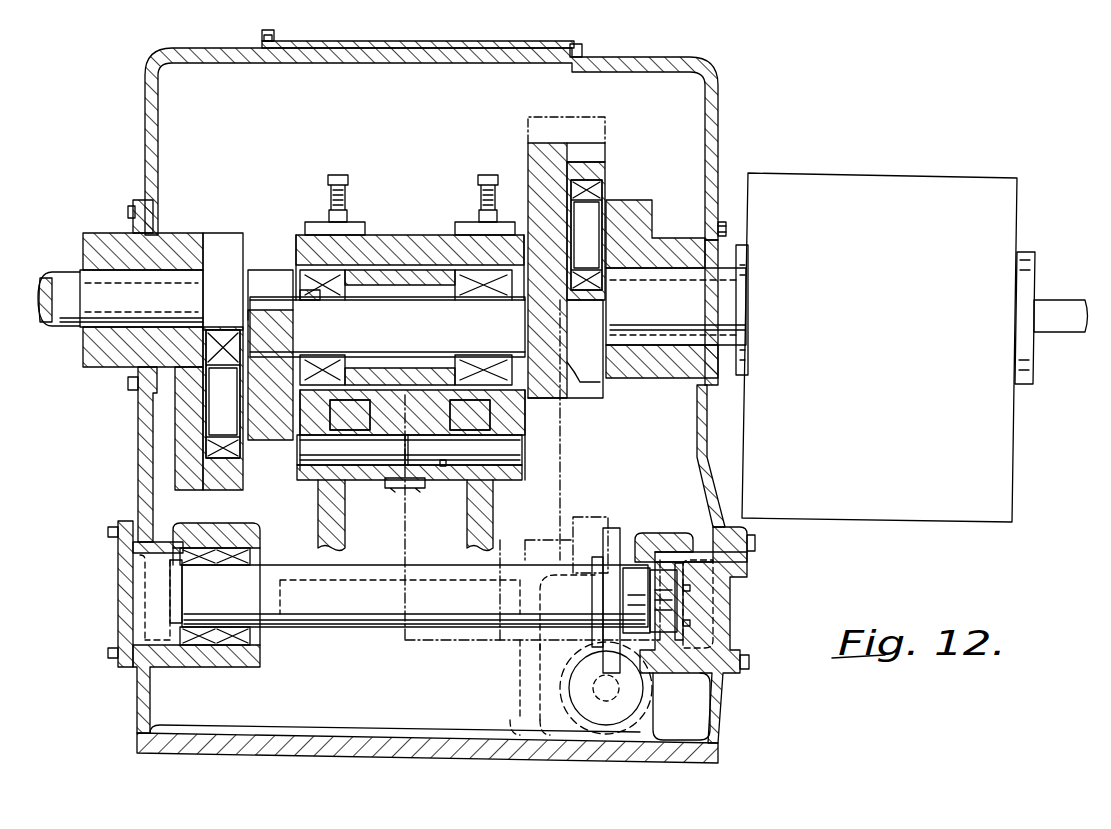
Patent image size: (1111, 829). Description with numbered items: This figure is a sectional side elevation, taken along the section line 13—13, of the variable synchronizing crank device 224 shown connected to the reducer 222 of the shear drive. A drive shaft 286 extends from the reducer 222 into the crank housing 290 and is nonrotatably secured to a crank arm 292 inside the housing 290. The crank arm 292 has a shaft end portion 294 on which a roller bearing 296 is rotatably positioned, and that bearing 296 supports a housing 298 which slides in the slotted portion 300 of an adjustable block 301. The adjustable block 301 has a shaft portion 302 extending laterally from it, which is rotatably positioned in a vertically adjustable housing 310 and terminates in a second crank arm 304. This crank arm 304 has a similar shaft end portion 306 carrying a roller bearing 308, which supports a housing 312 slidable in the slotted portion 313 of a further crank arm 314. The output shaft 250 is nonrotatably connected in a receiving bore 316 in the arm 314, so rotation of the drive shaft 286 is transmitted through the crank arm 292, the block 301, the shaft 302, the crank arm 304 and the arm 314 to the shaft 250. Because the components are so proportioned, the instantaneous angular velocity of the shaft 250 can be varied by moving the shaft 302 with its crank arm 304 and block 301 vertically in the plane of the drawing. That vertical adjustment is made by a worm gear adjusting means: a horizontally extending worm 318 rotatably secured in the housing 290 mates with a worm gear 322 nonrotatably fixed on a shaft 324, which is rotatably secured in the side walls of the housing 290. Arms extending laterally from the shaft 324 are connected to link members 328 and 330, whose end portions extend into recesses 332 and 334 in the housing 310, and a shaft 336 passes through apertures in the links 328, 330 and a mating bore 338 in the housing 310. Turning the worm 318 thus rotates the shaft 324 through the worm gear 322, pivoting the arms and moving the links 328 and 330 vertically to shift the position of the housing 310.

The section line 13— 13 is at (415, 150).
The reducer 222 is at (908, 322).
The synchronizing crank device 224 is at (744, 121).
The shaft 250 is at (62, 272).
The drive shaft 286 is at (676, 306).
The crank housing 290 is at (652, 60).
The crank arm 292 is at (632, 212).
The shaft end portion 294 is at (600, 210).
The roller bearing 296 is at (598, 190).
The housing 298 is at (590, 383).
The slotted portion 300 is at (575, 395).
The adjustable block 301 is at (535, 162).
The shaft portion 302 is at (387, 327).
The crank arm 304 is at (272, 430).
The shaft end portion 306 is at (240, 403).
The roller bearing 308 is at (210, 445).
The vertically adjustable housing 310 is at (412, 240).
The housing 312 is at (232, 470).
The slotted portion 313 is at (245, 248).
The crank arm 314 is at (180, 240).
The receiving bore 316 is at (135, 240).
The worm 318 is at (625, 692).
The worm gear 322 is at (610, 540).
The shaft 324 is at (488, 630).
The link member 328 is at (475, 540).
The link member 330 is at (330, 538).
The recess 332 is at (515, 436).
The recess 334 is at (340, 412).
The shaft 336 is at (500, 455).
The mating bore 338 is at (443, 468).